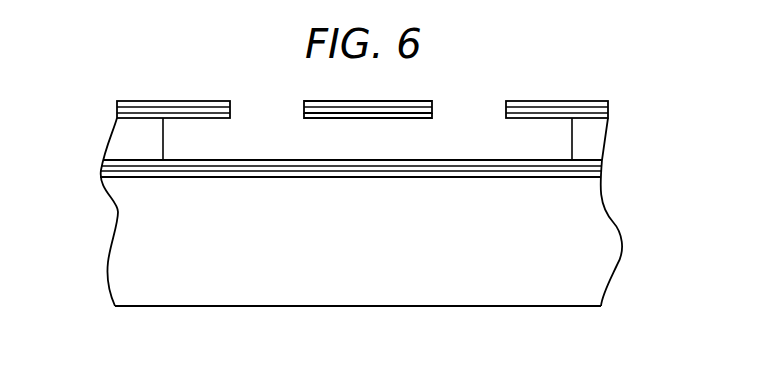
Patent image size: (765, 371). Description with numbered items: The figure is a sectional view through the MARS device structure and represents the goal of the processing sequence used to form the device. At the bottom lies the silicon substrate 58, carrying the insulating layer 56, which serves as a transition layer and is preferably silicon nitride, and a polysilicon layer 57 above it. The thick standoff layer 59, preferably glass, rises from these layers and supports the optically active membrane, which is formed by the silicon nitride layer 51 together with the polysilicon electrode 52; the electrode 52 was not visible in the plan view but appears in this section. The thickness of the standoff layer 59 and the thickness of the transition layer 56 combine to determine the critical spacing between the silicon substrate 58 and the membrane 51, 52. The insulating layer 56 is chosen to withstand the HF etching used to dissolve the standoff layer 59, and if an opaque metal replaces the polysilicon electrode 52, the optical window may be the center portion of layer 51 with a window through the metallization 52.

The silicon nitride layer 51 is at (305, 106).
The polysilicon electrode 52 is at (420, 116).
The insulating layer 56 is at (597, 172).
The polysilicon layer 57 is at (596, 162).
The silicon substrate 58 is at (603, 243).
The thick standoff layer 59 is at (128, 149).